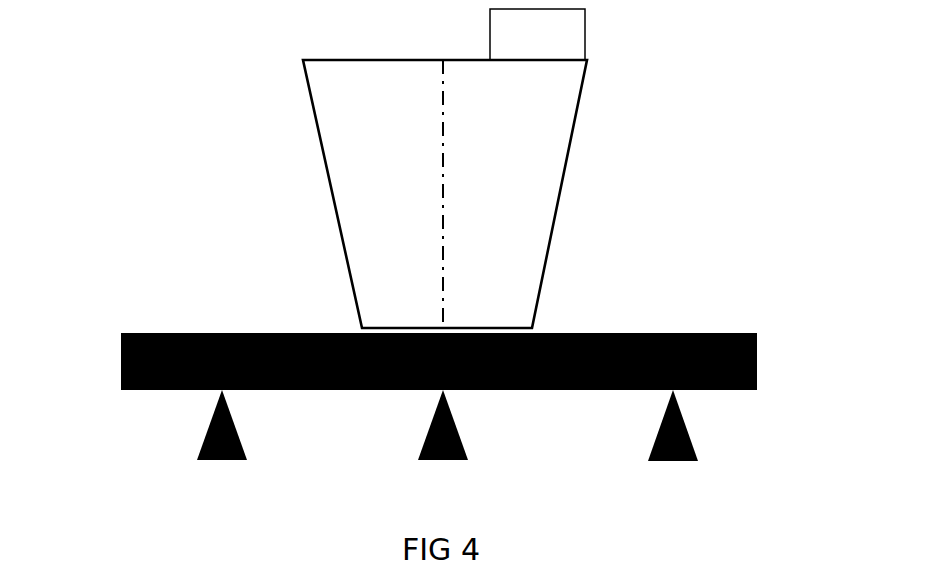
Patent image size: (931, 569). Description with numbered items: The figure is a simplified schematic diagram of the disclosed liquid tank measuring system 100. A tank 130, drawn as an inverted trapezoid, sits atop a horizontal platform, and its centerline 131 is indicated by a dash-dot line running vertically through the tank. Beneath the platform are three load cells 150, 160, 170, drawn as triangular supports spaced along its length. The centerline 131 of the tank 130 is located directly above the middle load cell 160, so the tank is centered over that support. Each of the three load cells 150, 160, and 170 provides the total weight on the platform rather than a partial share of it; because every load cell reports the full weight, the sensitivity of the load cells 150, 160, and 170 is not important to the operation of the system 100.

The liquid tank measuring system 100 is at (80, 233).
The tank 130 is at (445, 194).
The centerline 131 is at (443, 60).
The load cell 150 is at (222, 450).
The middle load cell 160 is at (443, 450).
The load cell 170 is at (673, 451).